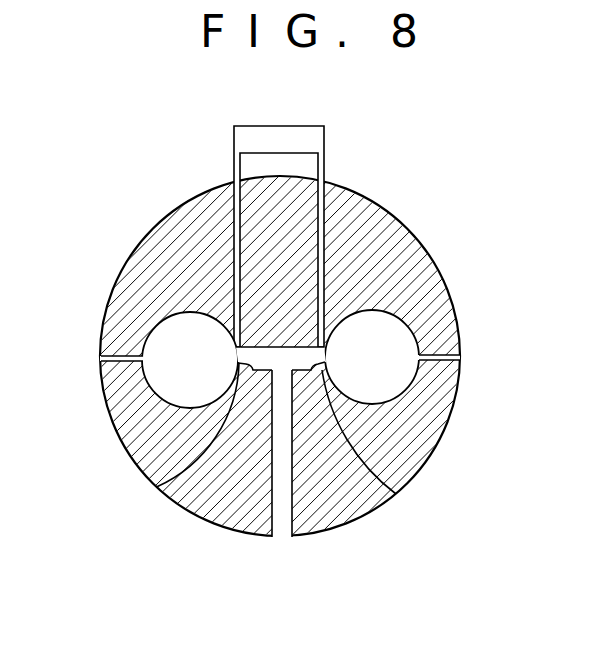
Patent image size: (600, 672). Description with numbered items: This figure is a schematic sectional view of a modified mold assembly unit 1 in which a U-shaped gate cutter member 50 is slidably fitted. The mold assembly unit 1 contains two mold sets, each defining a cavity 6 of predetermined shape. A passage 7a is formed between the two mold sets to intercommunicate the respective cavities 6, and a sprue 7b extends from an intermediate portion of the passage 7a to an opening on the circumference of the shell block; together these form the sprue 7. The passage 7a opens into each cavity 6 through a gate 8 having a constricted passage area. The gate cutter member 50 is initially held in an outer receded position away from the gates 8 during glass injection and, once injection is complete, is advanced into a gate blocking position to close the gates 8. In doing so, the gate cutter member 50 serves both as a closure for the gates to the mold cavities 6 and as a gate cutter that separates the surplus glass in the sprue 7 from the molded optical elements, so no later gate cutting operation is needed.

The mold assembly unit 1 is at (425, 240).
The gate cutter member 50 is at (322, 152).
The cavity 6 is at (400, 352).
The sprue 7 is at (248, 490).
The passage 7a is at (292, 362).
The sprue 7b is at (283, 523).
The gate 8 is at (222, 435).